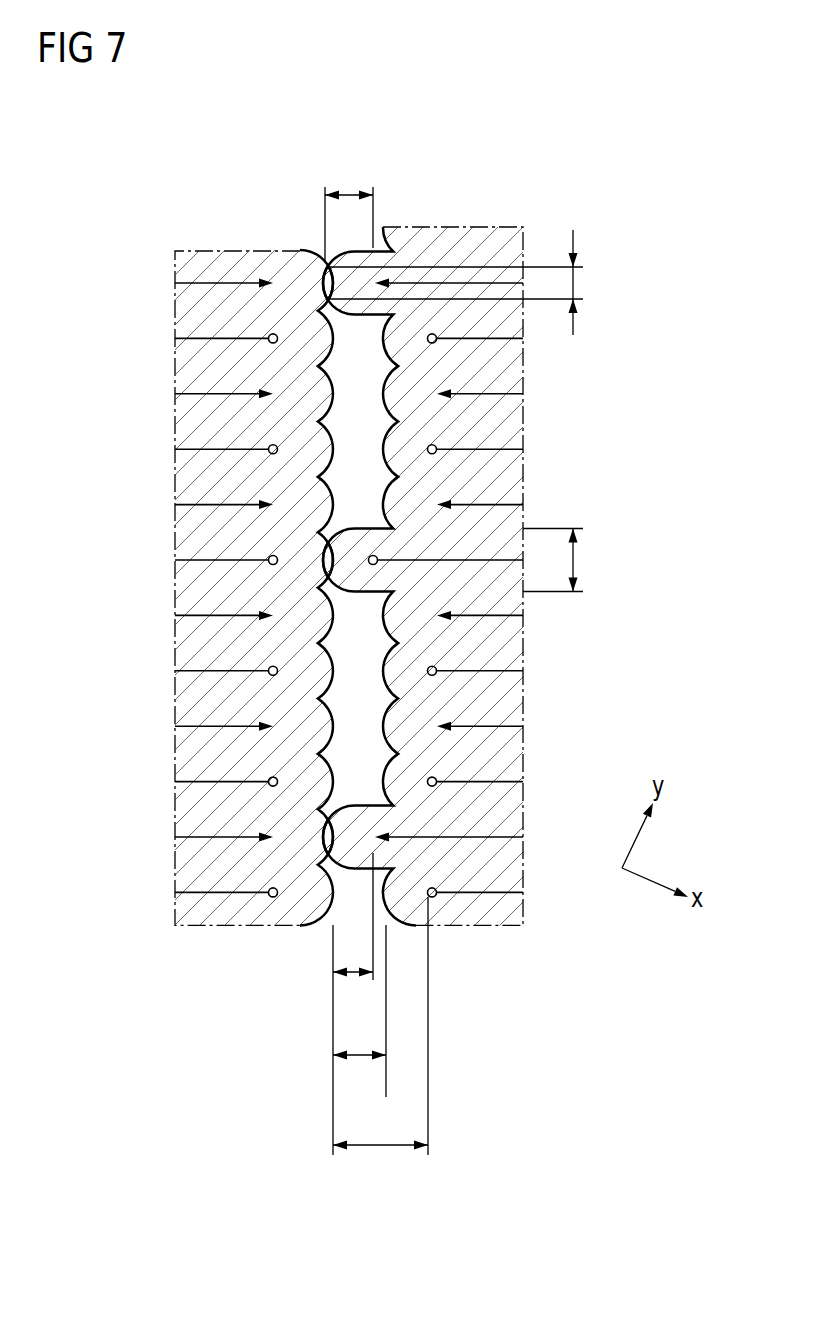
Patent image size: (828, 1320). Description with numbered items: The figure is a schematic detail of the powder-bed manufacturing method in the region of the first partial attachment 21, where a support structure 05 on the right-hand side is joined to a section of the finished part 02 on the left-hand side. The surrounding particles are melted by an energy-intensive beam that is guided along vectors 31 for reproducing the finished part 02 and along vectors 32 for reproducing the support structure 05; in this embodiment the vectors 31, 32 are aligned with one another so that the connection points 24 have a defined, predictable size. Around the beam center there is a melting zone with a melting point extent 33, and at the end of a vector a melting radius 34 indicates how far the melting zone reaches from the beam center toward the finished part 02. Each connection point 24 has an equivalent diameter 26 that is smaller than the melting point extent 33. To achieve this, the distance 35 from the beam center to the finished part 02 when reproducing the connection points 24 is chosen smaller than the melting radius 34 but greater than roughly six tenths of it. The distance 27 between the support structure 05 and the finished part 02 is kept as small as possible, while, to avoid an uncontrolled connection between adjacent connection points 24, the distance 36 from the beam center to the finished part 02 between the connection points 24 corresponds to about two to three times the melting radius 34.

The first partial attachment 21 is at (117, 270).
The finished part 02 is at (186, 472).
The support structure 05 is at (513, 690).
The connection point 24 is at (327, 267).
The equivalent diameter 26 is at (576, 282).
The distance between support structure and finished part 27 is at (360, 1059).
The vector 31 is at (200, 560).
The vector 32 is at (483, 790).
The melting point extent 33 is at (576, 562).
The melting radius 34 is at (347, 190).
The distance from beam center to finished part 35 is at (353, 976).
The distance from beam center to finished part between connection points 36 is at (380, 1149).